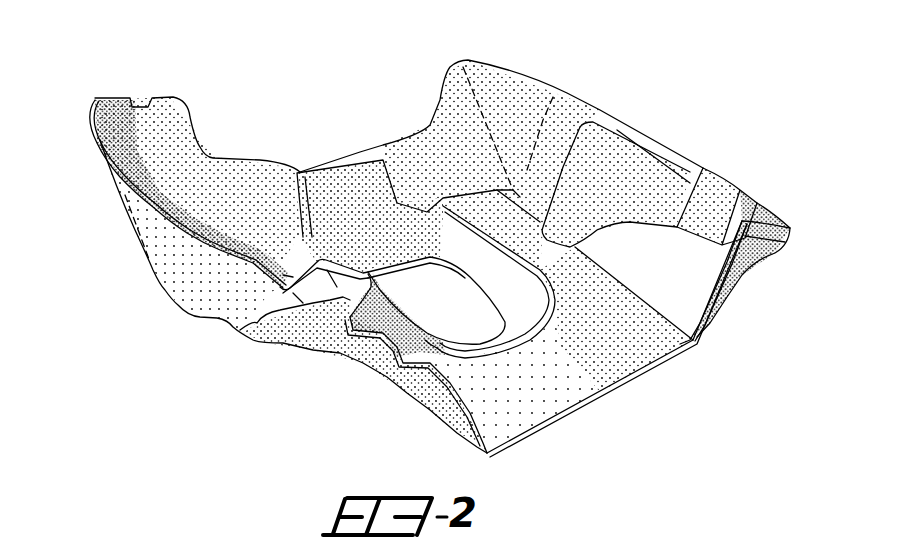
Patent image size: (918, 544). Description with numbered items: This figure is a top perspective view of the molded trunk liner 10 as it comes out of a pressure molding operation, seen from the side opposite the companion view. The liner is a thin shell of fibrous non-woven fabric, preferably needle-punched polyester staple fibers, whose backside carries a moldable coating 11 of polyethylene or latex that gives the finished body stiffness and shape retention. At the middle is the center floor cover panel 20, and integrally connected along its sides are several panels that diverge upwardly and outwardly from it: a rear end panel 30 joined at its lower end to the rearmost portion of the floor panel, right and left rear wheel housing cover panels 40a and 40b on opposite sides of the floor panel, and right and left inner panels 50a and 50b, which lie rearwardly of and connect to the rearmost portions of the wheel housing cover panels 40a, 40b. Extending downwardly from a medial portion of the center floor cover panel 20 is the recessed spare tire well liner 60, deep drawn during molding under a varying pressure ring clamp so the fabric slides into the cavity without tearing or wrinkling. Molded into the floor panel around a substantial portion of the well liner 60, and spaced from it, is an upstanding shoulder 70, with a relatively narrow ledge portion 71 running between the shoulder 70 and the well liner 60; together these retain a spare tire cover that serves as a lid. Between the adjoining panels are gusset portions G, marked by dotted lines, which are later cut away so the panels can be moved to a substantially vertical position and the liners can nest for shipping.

The trunk liner 10 is at (316, 97).
The moldable coating 11 is at (575, 420).
The center floor cover panel 20 is at (587, 381).
The rear end panel 30 is at (253, 183).
The right rear wheel housing cover panel 40a is at (427, 378).
The left rear wheel housing cover panel 40b is at (697, 280).
The right inner panel 50a is at (173, 278).
The left inner panel 50b is at (580, 117).
The recessed spare tire well liner 60 is at (485, 269).
The upstanding shoulder 70 is at (555, 283).
The ledge portion 71 is at (525, 340).
The gusset portions G is at (97, 101).